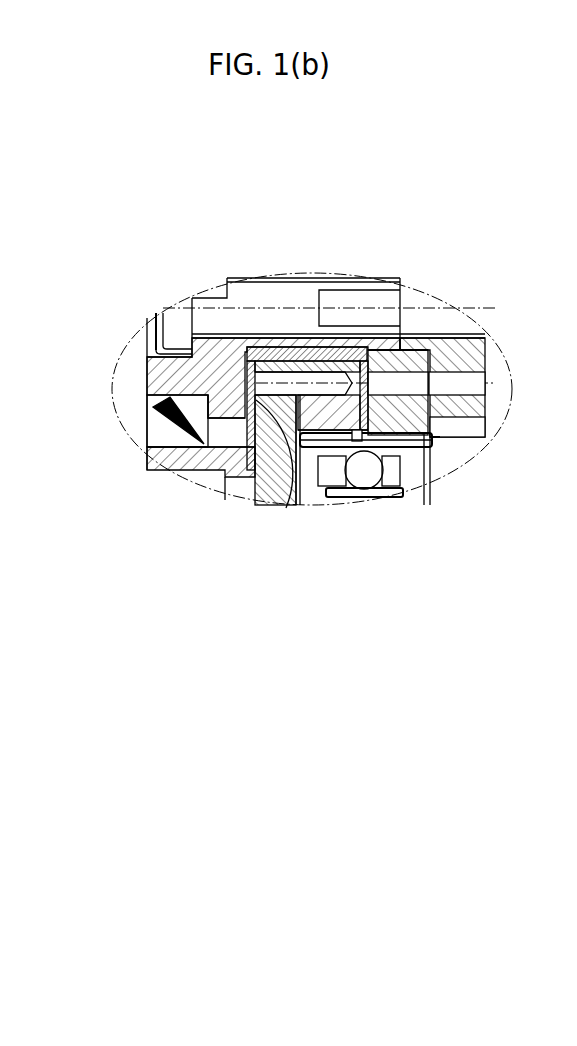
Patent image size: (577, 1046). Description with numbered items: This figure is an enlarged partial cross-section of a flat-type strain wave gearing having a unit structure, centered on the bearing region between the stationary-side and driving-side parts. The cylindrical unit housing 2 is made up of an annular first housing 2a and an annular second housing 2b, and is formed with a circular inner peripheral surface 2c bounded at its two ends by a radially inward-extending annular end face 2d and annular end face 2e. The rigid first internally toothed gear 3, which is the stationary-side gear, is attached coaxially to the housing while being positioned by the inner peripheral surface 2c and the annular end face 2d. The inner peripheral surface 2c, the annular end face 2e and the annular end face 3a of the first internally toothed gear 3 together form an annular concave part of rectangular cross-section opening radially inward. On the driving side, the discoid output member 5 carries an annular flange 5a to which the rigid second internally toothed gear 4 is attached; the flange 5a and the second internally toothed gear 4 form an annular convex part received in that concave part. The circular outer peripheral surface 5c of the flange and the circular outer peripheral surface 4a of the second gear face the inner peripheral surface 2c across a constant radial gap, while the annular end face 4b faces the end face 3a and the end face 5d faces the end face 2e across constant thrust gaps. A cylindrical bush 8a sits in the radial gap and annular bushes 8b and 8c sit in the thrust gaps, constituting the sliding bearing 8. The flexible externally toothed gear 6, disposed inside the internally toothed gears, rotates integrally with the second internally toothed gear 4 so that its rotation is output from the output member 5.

The unit housing 2 is at (340, 270).
The first housing 2a is at (486, 353).
The second housing 2b is at (147, 368).
The circular inner peripheral surface 2c is at (247, 350).
The annular end face 2d is at (413, 350).
The annular end face 2e is at (287, 507).
The first internally toothed gear 3 is at (410, 449).
The annular end face 3a is at (353, 348).
The second internally toothed gear 4 is at (318, 449).
The circular outer peripheral surface 4a is at (332, 349).
The annular end face 4b is at (392, 490).
The output member 5 is at (148, 463).
The annular flange 5a is at (252, 427).
The circular outer peripheral surface 5c is at (286, 348).
The end face 5d is at (231, 418).
The flexible externally toothed gear 6 is at (441, 437).
The sliding bearing 8 is at (315, 333).
The cylindrical bush 8a is at (294, 345).
The annular bush 8b is at (374, 403).
The annular bush 8c is at (243, 378).